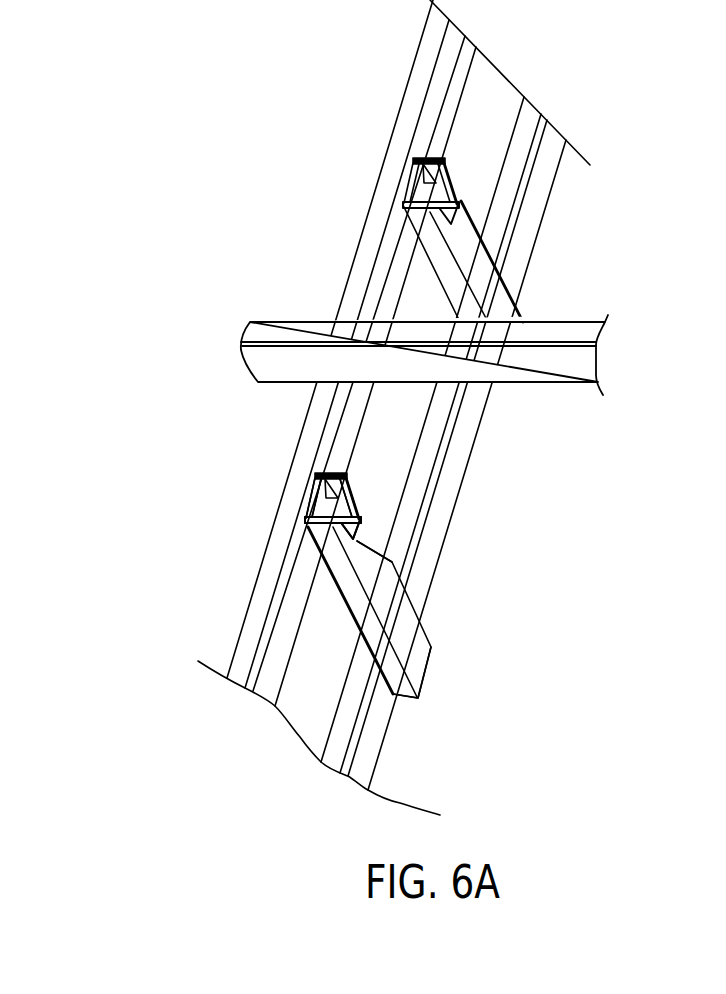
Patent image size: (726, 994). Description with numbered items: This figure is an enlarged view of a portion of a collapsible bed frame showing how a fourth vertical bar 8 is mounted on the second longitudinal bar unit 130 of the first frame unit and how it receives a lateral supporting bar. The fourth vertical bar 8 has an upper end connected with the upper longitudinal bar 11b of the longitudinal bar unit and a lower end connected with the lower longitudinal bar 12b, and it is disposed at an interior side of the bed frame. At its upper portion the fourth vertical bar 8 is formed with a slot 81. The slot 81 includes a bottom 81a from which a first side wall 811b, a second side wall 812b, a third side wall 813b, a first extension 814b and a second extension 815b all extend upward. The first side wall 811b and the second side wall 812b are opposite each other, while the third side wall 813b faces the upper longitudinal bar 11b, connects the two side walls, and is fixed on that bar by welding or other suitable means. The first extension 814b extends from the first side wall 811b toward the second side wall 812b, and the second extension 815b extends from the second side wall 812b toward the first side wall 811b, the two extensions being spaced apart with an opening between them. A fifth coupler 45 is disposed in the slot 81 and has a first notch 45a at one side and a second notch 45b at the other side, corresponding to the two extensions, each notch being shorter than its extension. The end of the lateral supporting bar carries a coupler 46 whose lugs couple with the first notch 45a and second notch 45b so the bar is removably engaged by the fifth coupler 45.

The second longitudinal bar unit 130 is at (378, 124).
The lower longitudinal bar 12b is at (542, 217).
The upper longitudinal bar 11b is at (377, 248).
The coupler 46 is at (237, 340).
The fifth coupler 45 is at (318, 530).
The first notch 45a is at (307, 507).
The second notch 45b is at (318, 473).
The slot 81 is at (597, 433).
The second extension 815b is at (360, 493).
The second side wall 812b is at (355, 497).
The third side wall 813b is at (358, 520).
The bottom 81a is at (354, 539).
The first extension 814b is at (370, 548).
The first side wall 811b is at (412, 664).
The fourth vertical bar 8 is at (420, 686).